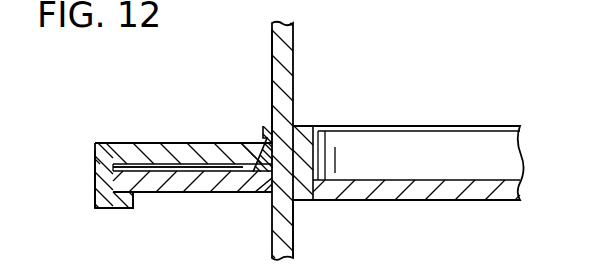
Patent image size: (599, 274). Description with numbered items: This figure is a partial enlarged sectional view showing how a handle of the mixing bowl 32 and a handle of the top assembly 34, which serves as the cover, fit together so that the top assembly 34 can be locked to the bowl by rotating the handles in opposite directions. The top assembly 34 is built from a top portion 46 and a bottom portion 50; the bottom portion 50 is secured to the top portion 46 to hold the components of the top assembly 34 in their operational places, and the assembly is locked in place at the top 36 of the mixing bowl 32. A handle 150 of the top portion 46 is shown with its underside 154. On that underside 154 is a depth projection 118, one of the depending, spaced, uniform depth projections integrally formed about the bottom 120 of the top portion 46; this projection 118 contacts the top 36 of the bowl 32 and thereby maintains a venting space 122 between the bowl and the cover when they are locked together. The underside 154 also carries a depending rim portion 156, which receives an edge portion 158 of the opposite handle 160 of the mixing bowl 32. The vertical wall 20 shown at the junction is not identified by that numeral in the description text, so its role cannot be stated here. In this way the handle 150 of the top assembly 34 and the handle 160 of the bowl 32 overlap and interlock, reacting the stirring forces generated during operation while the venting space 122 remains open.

The wall 20 is at (271, 38).
The top portion 46 is at (271, 72).
The mixing bowl 32 is at (295, 219).
The bottom portion 50 is at (410, 201).
The underside 154 is at (267, 133).
The handle 150 is at (108, 142).
The top assembly 34 is at (134, 141).
The venting space 122 is at (167, 166).
The top 36 is at (245, 157).
The depending rim portion 156 is at (93, 198).
The edge portion 158 is at (120, 209).
The bottom 120 is at (153, 193).
The handle 160 is at (220, 193).
The depth projection 118 is at (266, 189).